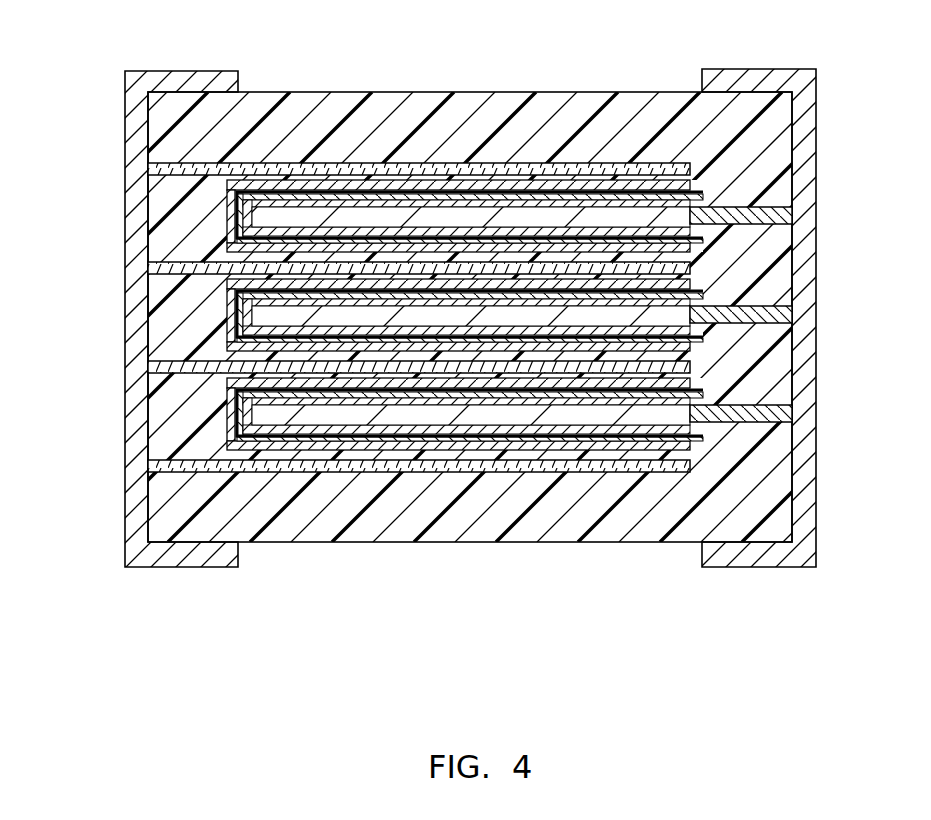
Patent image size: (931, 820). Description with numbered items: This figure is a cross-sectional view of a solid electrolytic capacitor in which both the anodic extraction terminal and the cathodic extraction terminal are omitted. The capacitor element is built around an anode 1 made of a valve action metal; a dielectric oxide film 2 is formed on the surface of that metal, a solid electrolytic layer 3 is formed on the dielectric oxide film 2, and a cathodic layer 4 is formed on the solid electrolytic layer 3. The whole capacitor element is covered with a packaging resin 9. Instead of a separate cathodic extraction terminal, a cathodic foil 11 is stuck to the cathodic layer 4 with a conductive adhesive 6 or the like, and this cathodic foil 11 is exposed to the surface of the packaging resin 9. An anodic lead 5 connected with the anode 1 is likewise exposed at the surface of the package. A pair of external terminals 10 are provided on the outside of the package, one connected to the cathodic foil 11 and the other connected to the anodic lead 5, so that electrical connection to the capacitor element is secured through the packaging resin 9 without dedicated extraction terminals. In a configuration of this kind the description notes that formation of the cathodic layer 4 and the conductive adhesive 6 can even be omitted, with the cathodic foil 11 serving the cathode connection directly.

The anode 1 is at (477, 245).
The dielectric oxide film 2 is at (690, 242).
The solid electrolytic layer 3 is at (700, 193).
The cathodic layer 4 is at (692, 182).
The anodic lead 5 is at (769, 320).
The conductive adhesive 6 is at (477, 234).
The packaging resin 9 is at (455, 545).
The external terminals 10 is at (126, 483).
The cathodic foil 11 is at (545, 170).